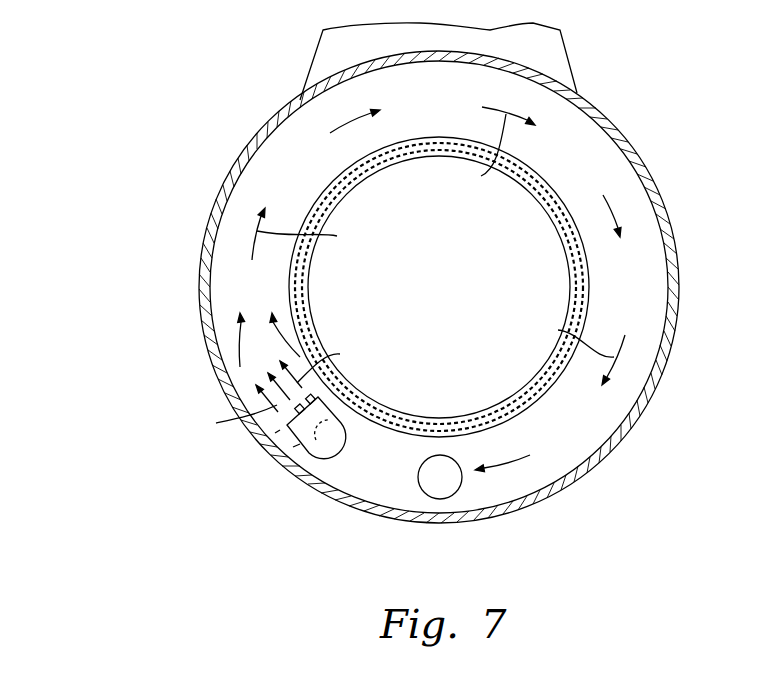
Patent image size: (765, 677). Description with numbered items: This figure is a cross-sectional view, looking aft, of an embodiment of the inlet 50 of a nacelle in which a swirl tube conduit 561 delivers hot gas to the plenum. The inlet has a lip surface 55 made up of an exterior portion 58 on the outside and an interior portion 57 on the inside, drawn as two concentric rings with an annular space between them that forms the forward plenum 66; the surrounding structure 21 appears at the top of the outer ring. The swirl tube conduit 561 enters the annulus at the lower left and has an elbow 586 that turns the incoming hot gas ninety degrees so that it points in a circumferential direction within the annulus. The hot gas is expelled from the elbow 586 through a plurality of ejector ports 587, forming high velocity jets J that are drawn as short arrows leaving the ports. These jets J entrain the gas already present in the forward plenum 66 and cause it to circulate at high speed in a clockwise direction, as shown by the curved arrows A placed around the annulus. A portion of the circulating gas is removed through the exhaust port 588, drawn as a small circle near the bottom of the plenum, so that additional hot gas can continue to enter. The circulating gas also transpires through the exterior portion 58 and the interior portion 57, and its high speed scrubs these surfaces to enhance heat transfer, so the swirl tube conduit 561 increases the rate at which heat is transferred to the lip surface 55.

The housing 21 is at (557, 62).
The inlet 50 is at (353, 273).
The lip surface 55 is at (327, 177).
The interior portion 57 is at (302, 288).
The exterior portion 58 is at (205, 333).
The forward plenum 66 is at (232, 207).
The swirl tube conduit 561 is at (335, 462).
The elbow 586 is at (293, 447).
The ejector ports 587 is at (275, 433).
The exhaust port 588 is at (462, 486).
The arrows A is at (435, 235).
The high velocity jets J is at (275, 393).